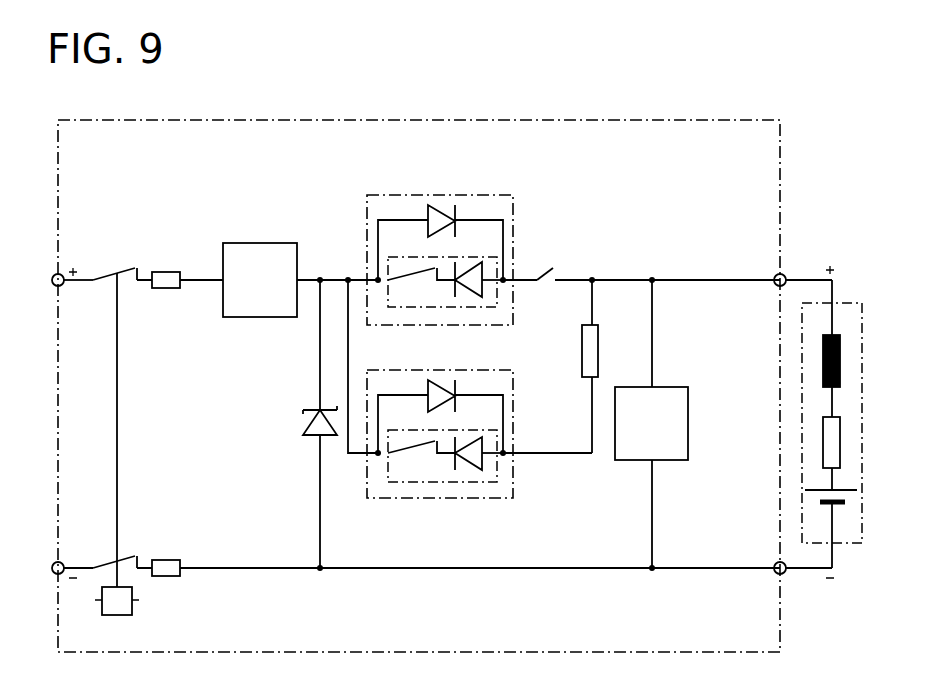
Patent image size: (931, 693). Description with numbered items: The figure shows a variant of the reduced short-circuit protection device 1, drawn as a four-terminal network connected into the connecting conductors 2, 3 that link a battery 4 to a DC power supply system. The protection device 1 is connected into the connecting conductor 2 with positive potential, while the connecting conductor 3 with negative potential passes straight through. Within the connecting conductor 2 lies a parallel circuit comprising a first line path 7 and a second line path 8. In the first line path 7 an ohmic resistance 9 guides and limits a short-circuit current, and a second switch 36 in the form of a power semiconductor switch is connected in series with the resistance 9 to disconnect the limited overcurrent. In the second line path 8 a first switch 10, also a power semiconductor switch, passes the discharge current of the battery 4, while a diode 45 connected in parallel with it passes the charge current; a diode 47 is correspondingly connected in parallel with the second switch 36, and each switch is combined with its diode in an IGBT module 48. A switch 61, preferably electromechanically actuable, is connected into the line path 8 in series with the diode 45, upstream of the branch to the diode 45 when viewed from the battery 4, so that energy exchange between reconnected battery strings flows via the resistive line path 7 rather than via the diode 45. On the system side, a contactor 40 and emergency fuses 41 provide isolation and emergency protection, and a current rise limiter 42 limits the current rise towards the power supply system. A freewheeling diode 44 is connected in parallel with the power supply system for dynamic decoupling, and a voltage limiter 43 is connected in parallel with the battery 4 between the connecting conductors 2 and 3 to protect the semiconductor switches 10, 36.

The short-circuit protection device 1 is at (785, 182).
The connecting conductor 2 is at (790, 275).
The connecting conductor 3 is at (790, 573).
The battery 4 is at (845, 543).
The first line path 7 is at (592, 310).
The second line path 8 is at (592, 278).
The ohmic resistance 9 is at (598, 352).
The first switch 10 is at (497, 270).
The second switch 36 is at (497, 475).
The contactor 40 is at (132, 608).
The emergency fuse 41 is at (163, 272).
The current rise limiter 42 is at (262, 243).
The voltage limiter 43 is at (672, 387).
The freewheeling diode 44 is at (303, 430).
The diode 45 is at (441, 205).
The diode 47 is at (441, 380).
The IGBT module 48 is at (487, 195).
The switch 61 is at (548, 270).